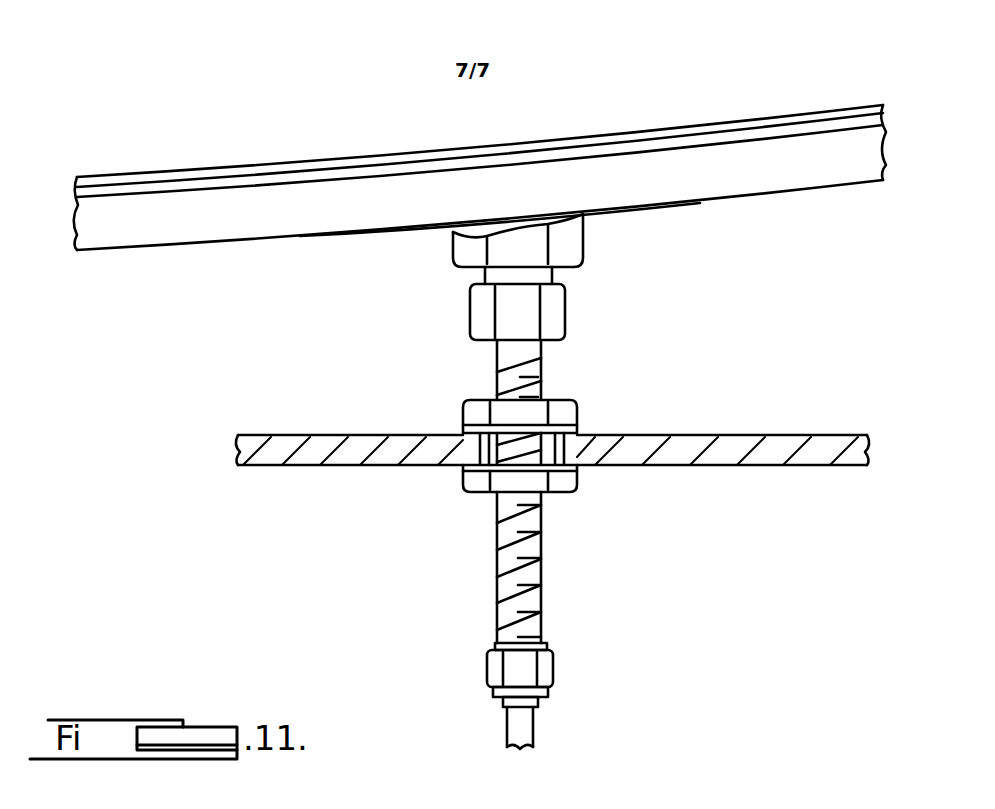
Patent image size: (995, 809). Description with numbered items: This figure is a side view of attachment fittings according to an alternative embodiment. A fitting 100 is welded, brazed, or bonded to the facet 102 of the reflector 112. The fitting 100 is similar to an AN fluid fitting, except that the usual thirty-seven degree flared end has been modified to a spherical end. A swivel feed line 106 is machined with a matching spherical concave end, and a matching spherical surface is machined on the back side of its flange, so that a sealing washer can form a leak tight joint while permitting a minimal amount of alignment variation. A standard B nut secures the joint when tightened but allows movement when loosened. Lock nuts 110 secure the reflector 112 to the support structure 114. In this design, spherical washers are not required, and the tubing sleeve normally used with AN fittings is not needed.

The fitting 100 is at (570, 253).
The facet 102 is at (700, 205).
The swivel feed line 106 is at (543, 573).
The lock nuts 110 is at (577, 412).
The reflector 112 is at (620, 108).
The support structure 114 is at (760, 465).